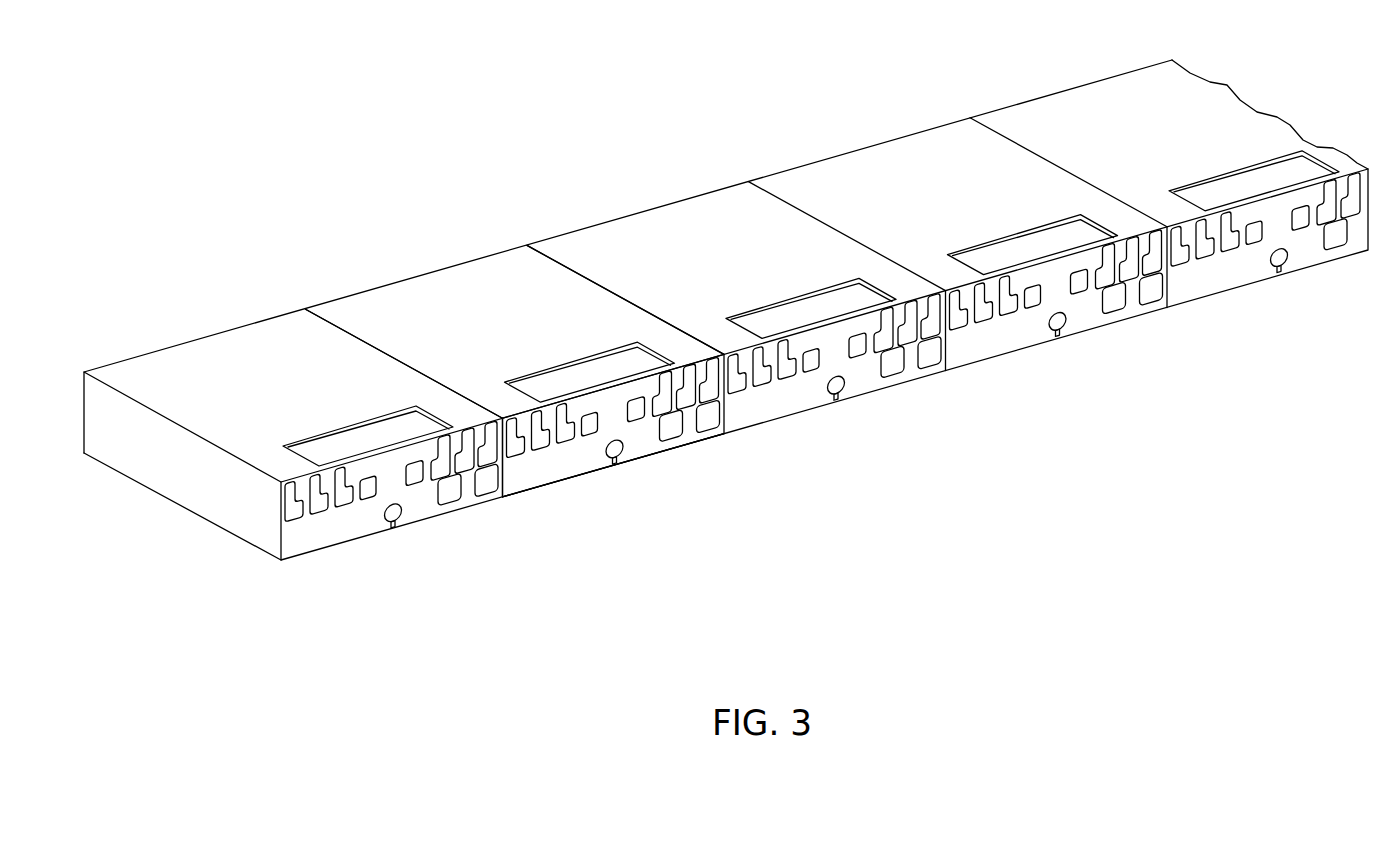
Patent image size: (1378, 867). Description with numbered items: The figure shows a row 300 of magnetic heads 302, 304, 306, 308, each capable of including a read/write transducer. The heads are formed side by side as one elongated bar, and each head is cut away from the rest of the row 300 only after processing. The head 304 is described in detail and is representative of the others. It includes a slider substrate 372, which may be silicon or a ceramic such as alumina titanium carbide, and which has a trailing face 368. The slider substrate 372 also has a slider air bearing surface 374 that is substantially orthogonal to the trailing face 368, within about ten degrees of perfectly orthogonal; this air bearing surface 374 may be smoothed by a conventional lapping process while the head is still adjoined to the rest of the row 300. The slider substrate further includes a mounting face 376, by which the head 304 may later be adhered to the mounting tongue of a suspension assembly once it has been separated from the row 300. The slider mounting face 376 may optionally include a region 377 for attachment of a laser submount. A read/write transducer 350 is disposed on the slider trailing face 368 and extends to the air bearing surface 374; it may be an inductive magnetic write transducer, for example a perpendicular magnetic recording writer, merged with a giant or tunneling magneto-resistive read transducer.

The row 300 is at (607, 48).
The magnetic head 302 is at (246, 379).
The magnetic head 304 is at (478, 336).
The magnetic head 306 is at (683, 249).
The magnetic head 308 is at (888, 190).
The read/write transducer 350 is at (623, 453).
The trailing face 368 is at (522, 480).
The slider substrate 372 is at (398, 295).
The slider air bearing surface 374 is at (582, 475).
The mounting face 376 is at (510, 278).
The region for attachment of a laser submount 377 is at (603, 378).